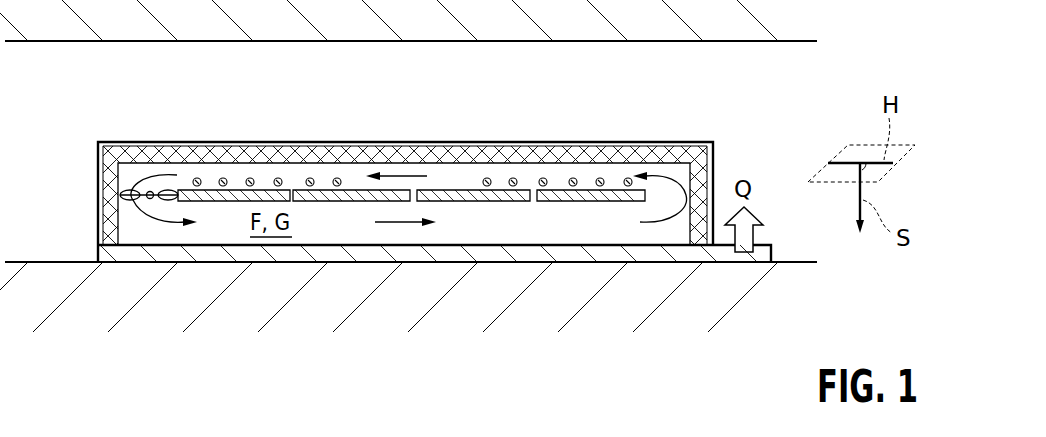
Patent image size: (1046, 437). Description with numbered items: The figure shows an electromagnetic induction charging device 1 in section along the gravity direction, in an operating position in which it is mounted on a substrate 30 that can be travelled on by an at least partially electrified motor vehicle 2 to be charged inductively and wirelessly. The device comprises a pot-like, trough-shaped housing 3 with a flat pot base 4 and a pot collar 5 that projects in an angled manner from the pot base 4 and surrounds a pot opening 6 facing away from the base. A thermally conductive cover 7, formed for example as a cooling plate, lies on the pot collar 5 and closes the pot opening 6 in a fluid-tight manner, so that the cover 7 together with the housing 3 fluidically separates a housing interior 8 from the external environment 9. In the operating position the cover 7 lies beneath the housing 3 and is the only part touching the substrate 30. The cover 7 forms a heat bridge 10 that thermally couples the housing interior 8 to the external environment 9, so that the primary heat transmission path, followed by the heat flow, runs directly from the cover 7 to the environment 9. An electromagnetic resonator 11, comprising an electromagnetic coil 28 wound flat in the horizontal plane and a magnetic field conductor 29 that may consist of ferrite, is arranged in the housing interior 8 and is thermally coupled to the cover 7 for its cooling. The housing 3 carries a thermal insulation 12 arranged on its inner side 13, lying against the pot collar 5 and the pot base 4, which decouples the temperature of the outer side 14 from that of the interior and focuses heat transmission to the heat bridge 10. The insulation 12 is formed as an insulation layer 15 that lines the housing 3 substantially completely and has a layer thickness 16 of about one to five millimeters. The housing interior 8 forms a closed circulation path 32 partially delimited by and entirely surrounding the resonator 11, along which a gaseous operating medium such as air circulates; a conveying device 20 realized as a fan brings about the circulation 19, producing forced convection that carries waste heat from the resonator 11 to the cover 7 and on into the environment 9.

The electromagnetic induction charging device 1 is at (803, 143).
The motor vehicle 2 is at (410, 20).
The housing 3 is at (405, 143).
The pot base 4 is at (213, 141).
The pot collar 5 is at (97, 189).
The pot opening 6 is at (108, 250).
The thermally conductive cover 7 is at (486, 252).
The housing interior 8 is at (504, 232).
The external environment 9 is at (49, 103).
The heat bridge 10 is at (503, 364).
The electromagnetic resonator 11 is at (457, 186).
The thermal insulation 12 is at (607, 141).
The inner side 13 is at (97, 171).
The outer side 14 is at (157, 141).
The insulation layer 15 is at (607, 141).
The layer thickness 16 is at (530, 186).
The circulation 19 is at (393, 224).
The conveying device 20 is at (97, 207).
The electromagnetic coil 28 is at (279, 177).
The magnetic field conductor 29 is at (323, 189).
The substrate 30 is at (711, 315).
The circulation path 32 is at (329, 219).